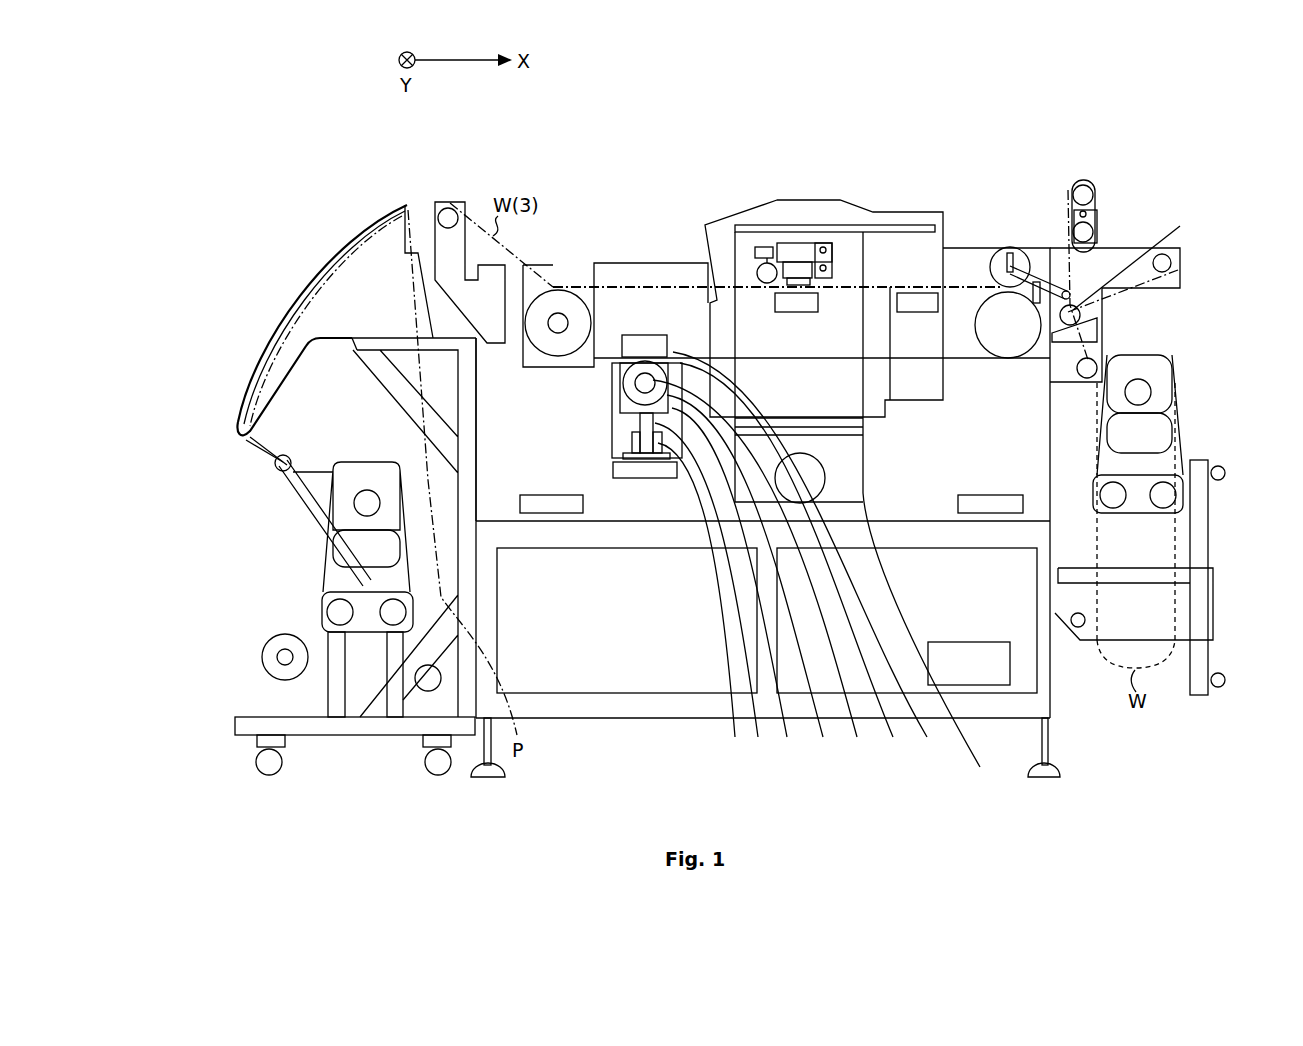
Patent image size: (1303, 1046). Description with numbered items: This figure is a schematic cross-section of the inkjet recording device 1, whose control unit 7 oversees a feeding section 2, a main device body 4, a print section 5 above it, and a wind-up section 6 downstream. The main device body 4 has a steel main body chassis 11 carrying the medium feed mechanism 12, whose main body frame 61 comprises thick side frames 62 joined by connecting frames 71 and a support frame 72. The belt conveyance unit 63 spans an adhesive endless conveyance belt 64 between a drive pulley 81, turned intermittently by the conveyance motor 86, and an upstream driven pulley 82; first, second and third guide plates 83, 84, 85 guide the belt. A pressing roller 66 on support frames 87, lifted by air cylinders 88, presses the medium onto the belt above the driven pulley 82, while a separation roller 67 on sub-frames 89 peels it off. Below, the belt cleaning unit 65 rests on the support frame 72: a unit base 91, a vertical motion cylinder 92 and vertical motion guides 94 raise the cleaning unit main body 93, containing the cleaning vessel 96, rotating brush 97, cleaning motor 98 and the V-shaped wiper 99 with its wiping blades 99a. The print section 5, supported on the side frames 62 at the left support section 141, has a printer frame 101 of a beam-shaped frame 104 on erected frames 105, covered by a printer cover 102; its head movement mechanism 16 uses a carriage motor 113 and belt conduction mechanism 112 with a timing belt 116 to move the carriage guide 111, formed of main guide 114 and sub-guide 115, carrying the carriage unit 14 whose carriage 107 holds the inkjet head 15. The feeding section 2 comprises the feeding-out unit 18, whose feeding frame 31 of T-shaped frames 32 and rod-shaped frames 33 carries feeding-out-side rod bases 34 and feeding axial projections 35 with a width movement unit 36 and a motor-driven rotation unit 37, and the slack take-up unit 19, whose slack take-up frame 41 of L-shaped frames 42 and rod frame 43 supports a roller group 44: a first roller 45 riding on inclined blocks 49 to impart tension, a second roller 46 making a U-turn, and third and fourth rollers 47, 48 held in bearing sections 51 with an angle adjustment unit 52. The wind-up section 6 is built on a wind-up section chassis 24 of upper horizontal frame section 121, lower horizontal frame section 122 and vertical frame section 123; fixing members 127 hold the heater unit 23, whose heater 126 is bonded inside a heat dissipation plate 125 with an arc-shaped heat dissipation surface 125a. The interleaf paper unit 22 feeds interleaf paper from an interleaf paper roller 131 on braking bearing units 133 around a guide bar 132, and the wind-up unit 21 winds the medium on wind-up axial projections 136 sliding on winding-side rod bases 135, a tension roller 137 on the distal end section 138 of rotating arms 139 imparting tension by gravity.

The inkjet recording device 1 is at (697, 120).
The feeding section 2 is at (1182, 126).
The main device body 4 is at (727, 768).
The print section 5 is at (888, 126).
The wind-up section 6 is at (355, 170).
The control unit 7 is at (990, 685).
The main body chassis 11 is at (551, 707).
The medium feed mechanism 12 is at (629, 198).
The carriage unit 14 is at (922, 188).
The inkjet head 15 is at (870, 290).
The head movement mechanism 16 is at (830, 143).
The feeding-out unit 18 is at (1224, 330).
The slack take-up unit 19 is at (1141, 158).
The wind-up unit 21 is at (192, 624).
The interleaf paper unit 22 is at (417, 780).
The heater unit 23 is at (199, 202).
The wind-up section chassis 24 is at (306, 536).
The feeding frame 31 is at (1254, 468).
The T-shaped frame 32 is at (1209, 500).
The rod-shaped frame 33 is at (1232, 699).
The feeding-out-side rod base 34 is at (1170, 507).
The feeding axial projection 35 is at (1150, 390).
The width movement unit 36 is at (1184, 470).
The motor-driven rotation unit 37 is at (1152, 427).
The slack take-up frame 41 is at (1172, 305).
The L-shaped frame 42 is at (1148, 282).
The rod frame 43 is at (1097, 366).
The roller group 44 is at (1225, 203).
The first roller 45 is at (1133, 257).
The second roller 46 is at (1168, 258).
The third roller 47 is at (1098, 240).
The fourth roller 48 is at (1093, 198).
The inclined block 49 is at (1095, 335).
The bearing section 51 is at (1081, 180).
The angle adjustment unit 52 is at (1079, 213).
The main body frame 61 is at (697, 751).
The side frame 62 is at (690, 510).
The belt conveyance unit 63 is at (588, 263).
The conveyance belt 64 is at (667, 290).
The belt cleaning unit 65 is at (615, 358).
The pressing roller 66 is at (1002, 258).
The separation roller 67 is at (449, 208).
The connecting frame 71 is at (1023, 737).
The support frame 72 is at (647, 478).
The drive pulley 81 is at (545, 303).
The driven pulley 82 is at (995, 315).
The first guide plate 83 is at (946, 246).
The second guide plate 84 is at (813, 351).
The third guide plate 85 is at (638, 335).
The conveyance motor 86 is at (558, 312).
The support frame 87 is at (1008, 262).
The air cylinder 88 is at (1033, 282).
The sub-frame 89 is at (468, 203).
The unit base 91 is at (702, 602).
The vertical motion cylinder 92 is at (714, 592).
The cleaning unit main body 93 is at (957, 775).
The vertical motion guide 94 is at (735, 584).
The cleaning vessel 96 is at (753, 582).
The rotating brush 97 is at (763, 575).
The cleaning motor 98 is at (794, 566).
The wiper 99 is at (814, 567).
The ink tube 99a is at (814, 556).
The printer frame 101 is at (977, 130).
The printer cover 102 is at (835, 240).
The beam-shaped frame 104 is at (915, 293).
The erected frame 105 is at (932, 293).
The carriage 107 is at (838, 280).
The carriage guide 111 is at (847, 186).
The belt conduction mechanism 112 is at (777, 217).
The carriage motor 113 is at (735, 252).
The main guide 114 is at (790, 262).
The sub-guide 115 is at (824, 243).
The timing belt 116 is at (760, 247).
The upper horizontal frame section 121 is at (453, 473).
The lower horizontal frame section 122 is at (267, 727).
The vertical frame section 123 is at (357, 337).
The heat dissipation plate 125 is at (307, 262).
The heat dissipation surface 125a is at (243, 357).
The heater 126 is at (353, 265).
The fixing member 127 is at (422, 230).
The interleaf paper roller 131 is at (281, 663).
The guide bar 132 is at (432, 685).
The bearing unit 133 is at (296, 672).
The winding-side rod base 135 is at (393, 612).
The wind-up axial projection 136 is at (345, 520).
The tension roller 137 is at (293, 474).
The nip roller 138 is at (345, 548).
The rotating arm 139 is at (354, 505).
The left support section 141 is at (940, 639).